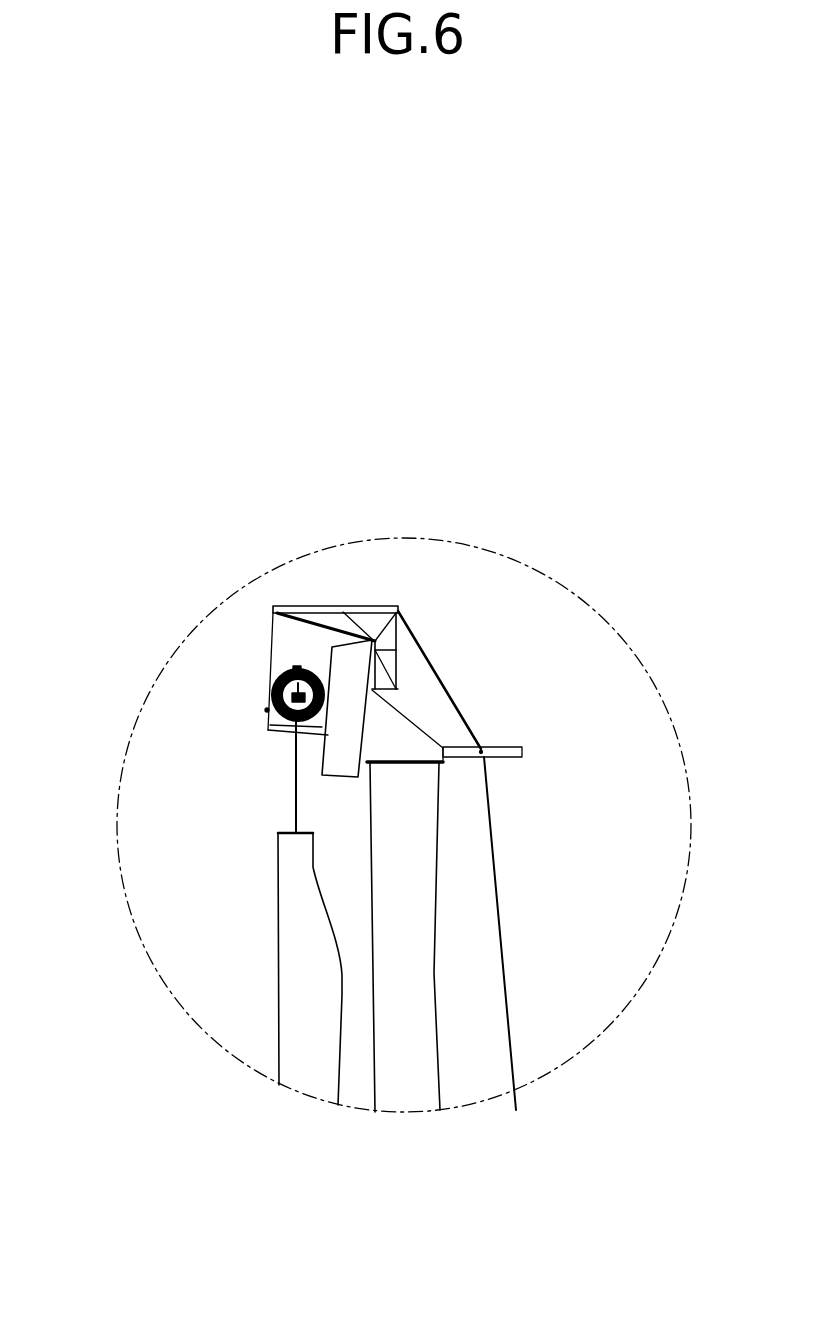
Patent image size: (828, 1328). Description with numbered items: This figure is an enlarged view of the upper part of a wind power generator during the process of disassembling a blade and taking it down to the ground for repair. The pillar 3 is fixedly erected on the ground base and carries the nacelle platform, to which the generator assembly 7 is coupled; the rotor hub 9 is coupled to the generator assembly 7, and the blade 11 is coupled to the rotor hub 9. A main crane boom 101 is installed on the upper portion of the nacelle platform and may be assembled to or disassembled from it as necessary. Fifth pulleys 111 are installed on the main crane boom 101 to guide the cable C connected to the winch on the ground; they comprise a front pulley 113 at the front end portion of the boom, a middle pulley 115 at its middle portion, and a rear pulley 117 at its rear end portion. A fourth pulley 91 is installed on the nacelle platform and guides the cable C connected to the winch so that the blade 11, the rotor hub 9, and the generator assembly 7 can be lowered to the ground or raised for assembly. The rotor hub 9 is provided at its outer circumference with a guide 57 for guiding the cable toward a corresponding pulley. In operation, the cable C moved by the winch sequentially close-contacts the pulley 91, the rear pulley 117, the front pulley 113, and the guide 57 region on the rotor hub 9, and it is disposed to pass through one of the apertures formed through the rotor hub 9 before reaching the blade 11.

The pillar 3 is at (405, 999).
The cable c is at (554, 933).
The fourth pulley 91 is at (543, 666).
The main crane boom 101 is at (463, 622).
The fifth pulleys 111 is at (344, 553).
The front pulley 113 is at (327, 580).
The middle pulley 115 is at (326, 533).
The rear pulley 117 is at (401, 557).
The guide 57 is at (181, 668).
The rotor hub 9 is at (188, 775).
The generator assembly 7 is at (282, 757).
The blade 11 is at (303, 1025).